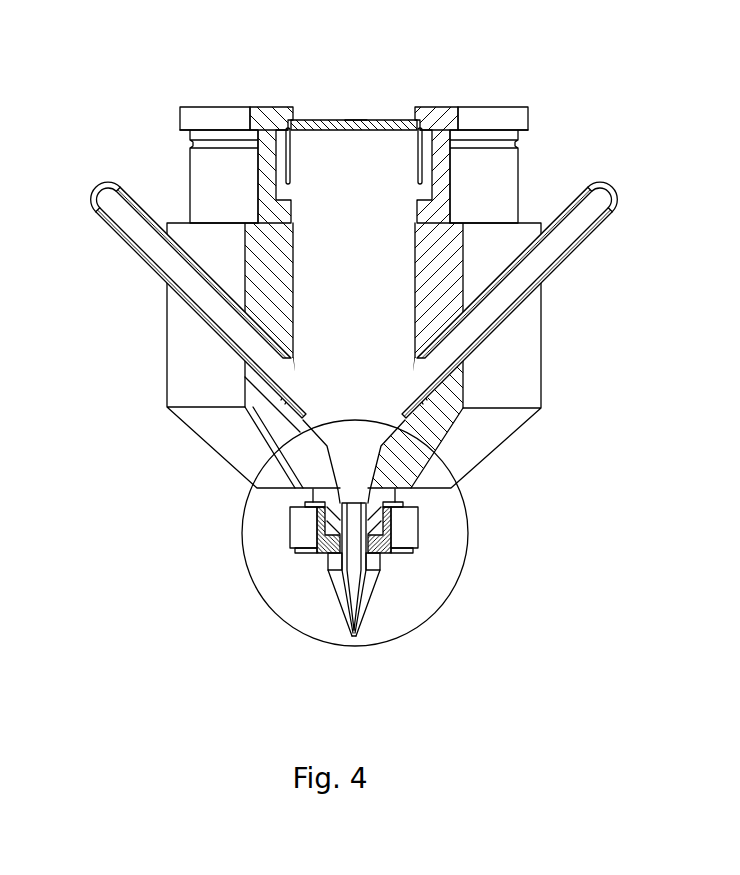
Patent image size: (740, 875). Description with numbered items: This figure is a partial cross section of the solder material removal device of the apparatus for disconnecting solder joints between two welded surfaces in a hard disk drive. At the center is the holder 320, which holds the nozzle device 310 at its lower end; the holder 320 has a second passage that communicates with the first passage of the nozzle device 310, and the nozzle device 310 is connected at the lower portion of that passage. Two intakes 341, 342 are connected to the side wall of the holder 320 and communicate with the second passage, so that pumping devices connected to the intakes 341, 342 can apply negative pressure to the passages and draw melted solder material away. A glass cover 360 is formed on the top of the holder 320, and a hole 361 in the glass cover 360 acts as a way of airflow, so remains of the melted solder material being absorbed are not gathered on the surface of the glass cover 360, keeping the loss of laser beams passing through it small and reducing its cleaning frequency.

The nozzle device 310 is at (400, 578).
The holder 320 is at (445, 400).
The intake 341 is at (203, 293).
The intake 342 is at (508, 292).
The glass cover 360 is at (396, 121).
The hole 361 is at (356, 119).